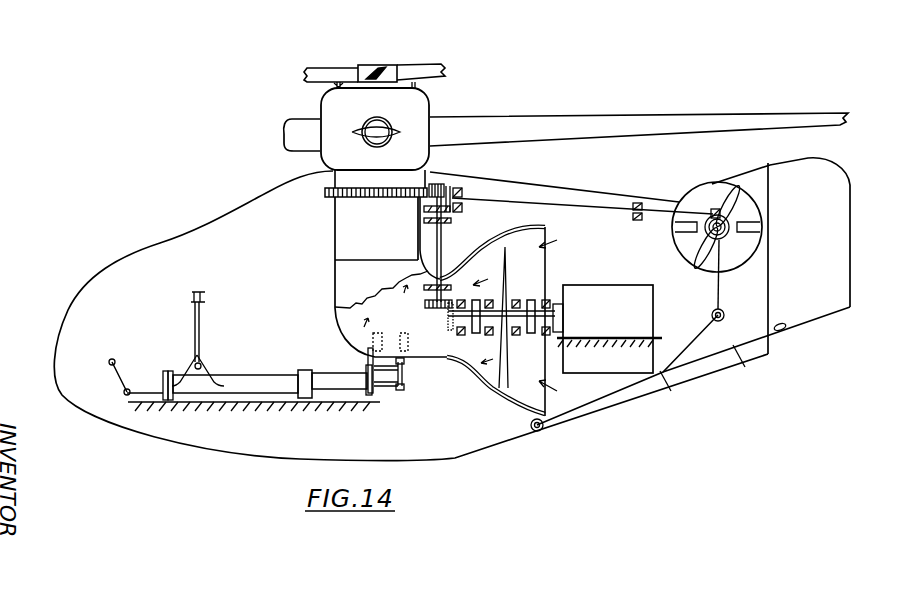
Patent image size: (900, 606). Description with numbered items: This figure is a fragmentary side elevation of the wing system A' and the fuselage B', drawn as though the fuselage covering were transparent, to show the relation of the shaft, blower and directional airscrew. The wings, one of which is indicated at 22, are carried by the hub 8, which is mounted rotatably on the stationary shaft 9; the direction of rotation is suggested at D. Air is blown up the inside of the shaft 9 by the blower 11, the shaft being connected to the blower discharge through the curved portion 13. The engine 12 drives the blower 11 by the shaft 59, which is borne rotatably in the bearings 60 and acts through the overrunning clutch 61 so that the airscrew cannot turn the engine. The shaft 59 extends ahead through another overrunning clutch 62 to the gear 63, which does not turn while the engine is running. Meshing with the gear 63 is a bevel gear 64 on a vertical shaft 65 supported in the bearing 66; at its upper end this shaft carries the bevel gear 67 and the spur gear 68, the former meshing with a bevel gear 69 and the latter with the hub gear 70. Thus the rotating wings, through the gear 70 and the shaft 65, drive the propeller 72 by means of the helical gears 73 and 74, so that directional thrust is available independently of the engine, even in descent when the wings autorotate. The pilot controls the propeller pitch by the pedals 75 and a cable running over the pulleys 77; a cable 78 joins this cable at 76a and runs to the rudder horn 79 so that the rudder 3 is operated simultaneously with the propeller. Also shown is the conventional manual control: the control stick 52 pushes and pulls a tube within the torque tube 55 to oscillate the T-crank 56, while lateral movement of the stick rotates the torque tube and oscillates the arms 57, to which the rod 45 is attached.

The wing 22 is at (445, 75).
The rotor blade direction D is at (318, 73).
The hub 8 is at (431, 110).
The wing system A' is at (566, 118).
The fuselage B' is at (388, 316).
The hub gear 70 is at (375, 198).
The stationary shaft 9 is at (334, 240).
The curved portion of shaft 13 is at (336, 318).
The blower 11 is at (560, 199).
The vertical shaft 65 is at (446, 246).
The spur gear 68 is at (437, 184).
The bevel gear 69 is at (458, 188).
The bevel gear 67 is at (422, 208).
The bearing 66 is at (452, 221).
The bevel gear 64 is at (428, 303).
The gear 63 is at (450, 325).
The overrunning clutch 61 is at (538, 330).
The overrunning clutch 62 is at (479, 336).
The bearings 60 is at (513, 300).
The shaft 59 is at (553, 303).
The engine 12 is at (609, 329).
The propeller 72 is at (734, 200).
The helical gear 74 is at (721, 238).
The helical gear 73 is at (715, 208).
The rudder 3 is at (840, 224).
The rudder horn 79 is at (787, 328).
The cable 78 is at (745, 367).
The junction 76a is at (671, 391).
The pulleys 77 is at (538, 432).
The torque tube 55 is at (243, 376).
The pedals 75 is at (127, 380).
The control stick 52 is at (206, 327).
The rod 45 is at (368, 362).
The T-crank 56 is at (404, 372).
The arms 57 is at (392, 394).